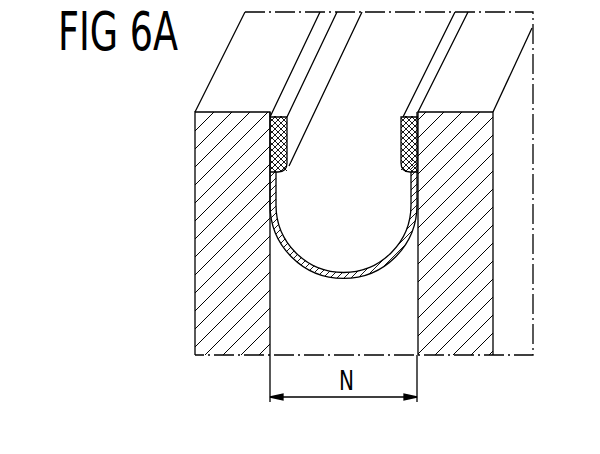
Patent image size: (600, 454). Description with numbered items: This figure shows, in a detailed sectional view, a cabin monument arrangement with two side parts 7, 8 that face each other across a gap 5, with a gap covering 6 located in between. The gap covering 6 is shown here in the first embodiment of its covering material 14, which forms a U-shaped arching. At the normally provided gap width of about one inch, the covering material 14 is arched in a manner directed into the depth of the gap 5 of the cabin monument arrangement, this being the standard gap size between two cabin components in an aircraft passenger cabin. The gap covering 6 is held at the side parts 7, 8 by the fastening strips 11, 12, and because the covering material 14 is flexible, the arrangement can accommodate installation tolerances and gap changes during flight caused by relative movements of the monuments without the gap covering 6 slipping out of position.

The gap 5 is at (402, 297).
The gap covering 6 is at (333, 287).
The side part 7 is at (207, 212).
The side part 8 is at (477, 222).
The fastening strip 11 is at (288, 165).
The fastening strip 12 is at (404, 166).
The covering material 14 is at (360, 262).